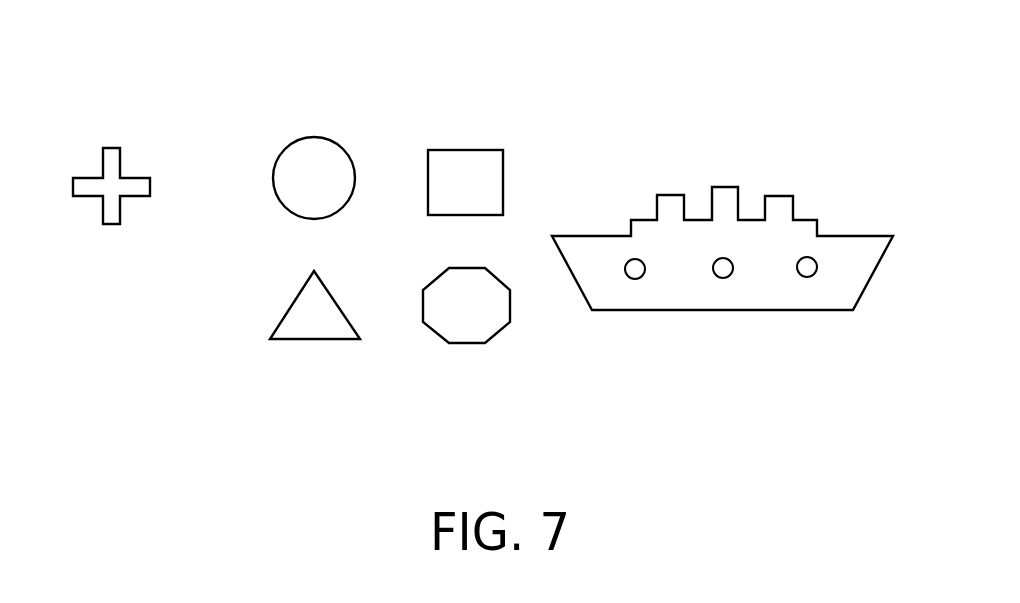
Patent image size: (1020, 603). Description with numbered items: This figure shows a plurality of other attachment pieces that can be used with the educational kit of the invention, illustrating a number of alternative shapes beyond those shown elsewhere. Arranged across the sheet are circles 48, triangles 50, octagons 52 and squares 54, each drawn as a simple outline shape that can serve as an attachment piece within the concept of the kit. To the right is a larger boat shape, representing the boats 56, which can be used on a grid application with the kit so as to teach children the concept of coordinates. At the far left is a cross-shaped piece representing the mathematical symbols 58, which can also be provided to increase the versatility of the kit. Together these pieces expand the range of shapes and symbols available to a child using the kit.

The circles 48 is at (336, 160).
The triangles 50 is at (328, 303).
The octagons 52 is at (492, 285).
The squares 54 is at (477, 157).
The boats 56 is at (667, 195).
The mathematical symbols 58 is at (120, 152).